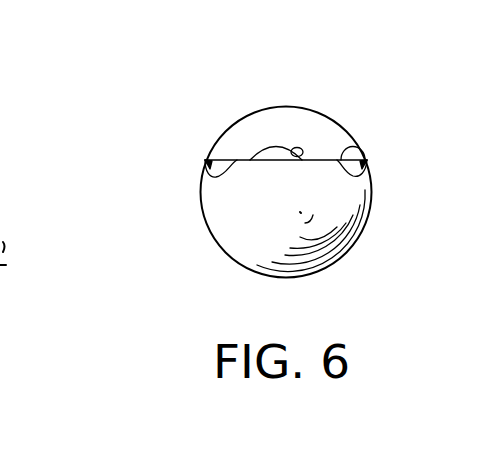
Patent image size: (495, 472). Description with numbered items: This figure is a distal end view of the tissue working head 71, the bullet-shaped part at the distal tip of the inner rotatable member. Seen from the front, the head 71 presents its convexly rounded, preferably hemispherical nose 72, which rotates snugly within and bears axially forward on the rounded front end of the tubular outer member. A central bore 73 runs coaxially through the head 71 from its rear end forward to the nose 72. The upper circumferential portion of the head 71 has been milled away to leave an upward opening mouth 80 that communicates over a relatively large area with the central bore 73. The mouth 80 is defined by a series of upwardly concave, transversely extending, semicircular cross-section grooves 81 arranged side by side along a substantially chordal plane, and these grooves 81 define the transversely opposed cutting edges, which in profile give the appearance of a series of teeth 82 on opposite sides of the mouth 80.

The tissue working head 71 is at (218, 99).
The nose 72 is at (252, 218).
The central bore 73 is at (307, 155).
The mouth 80 is at (280, 160).
The grooves 81 is at (363, 159).
The teeth 82 is at (357, 143).